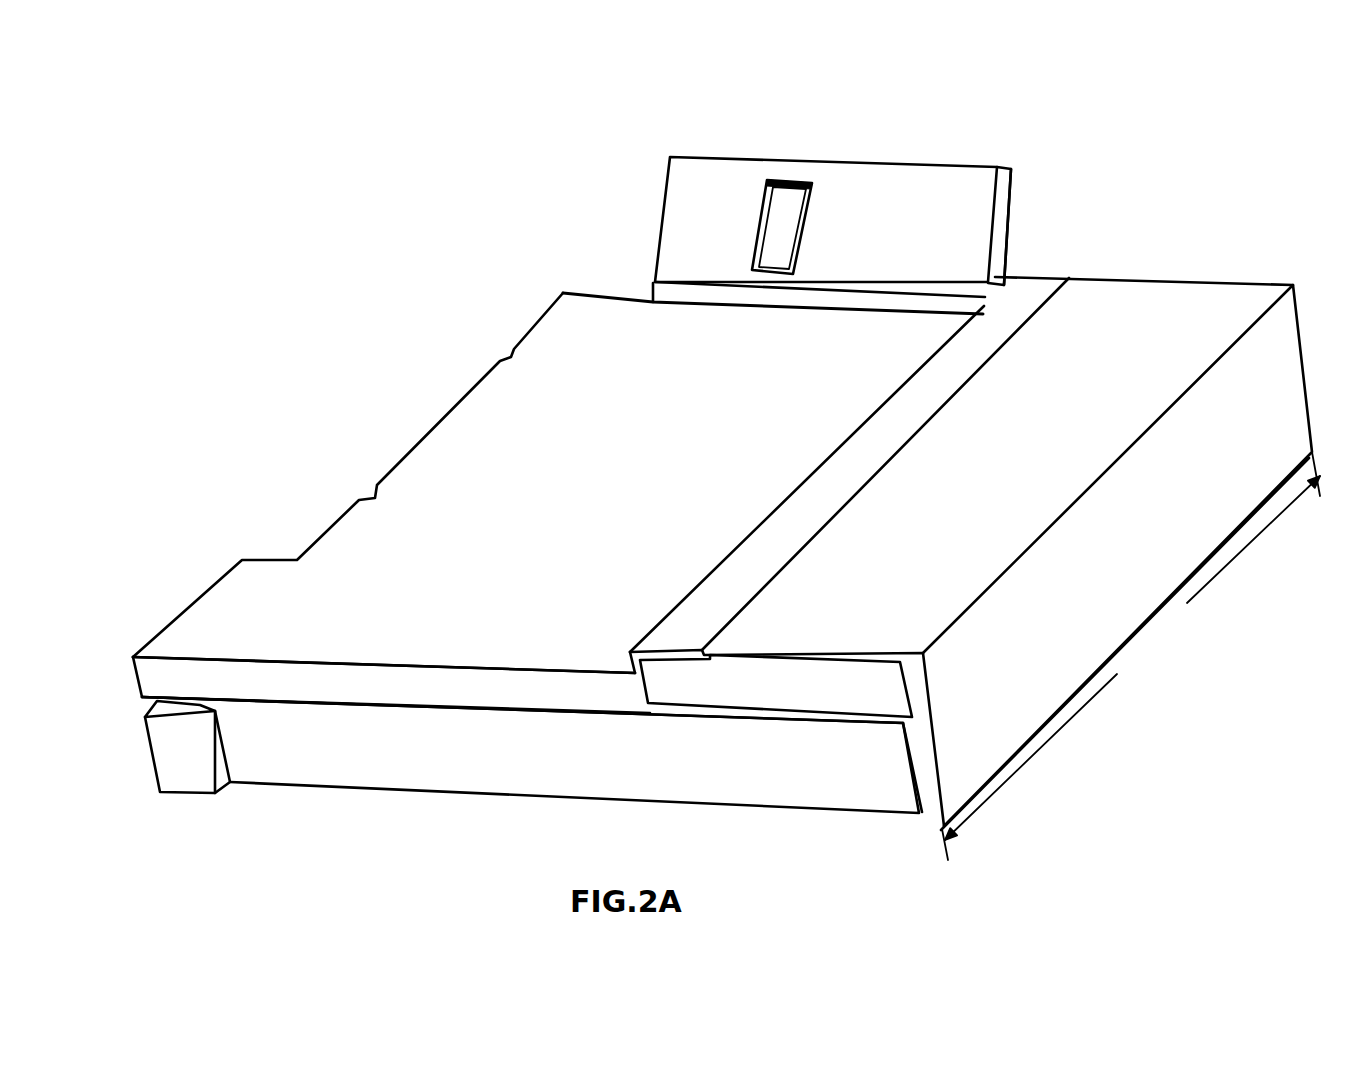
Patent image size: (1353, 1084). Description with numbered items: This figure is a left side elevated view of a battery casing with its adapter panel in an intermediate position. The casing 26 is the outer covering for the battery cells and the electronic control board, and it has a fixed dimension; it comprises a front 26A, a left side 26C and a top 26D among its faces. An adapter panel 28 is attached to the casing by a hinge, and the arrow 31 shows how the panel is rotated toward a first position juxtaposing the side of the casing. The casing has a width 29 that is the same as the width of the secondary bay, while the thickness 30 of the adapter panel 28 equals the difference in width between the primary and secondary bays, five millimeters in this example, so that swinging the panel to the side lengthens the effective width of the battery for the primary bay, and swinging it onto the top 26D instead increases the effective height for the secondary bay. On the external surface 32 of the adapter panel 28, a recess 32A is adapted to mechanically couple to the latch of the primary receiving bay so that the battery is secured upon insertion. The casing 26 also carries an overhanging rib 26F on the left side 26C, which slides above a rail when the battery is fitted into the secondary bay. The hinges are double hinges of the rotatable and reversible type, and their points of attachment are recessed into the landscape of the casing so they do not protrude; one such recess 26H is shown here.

The casing 26 is at (722, 545).
The front 26A is at (1269, 342).
The left side 26C is at (713, 778).
The top 26D is at (448, 432).
The overhanging rib 26F is at (430, 687).
The recess 26H is at (648, 302).
The adapter panel 28 is at (1013, 235).
The width 29 is at (1131, 656).
The thickness 30 is at (999, 146).
The arrow 31 is at (843, 185).
The external surface 32 is at (870, 180).
The recess 32A is at (783, 203).